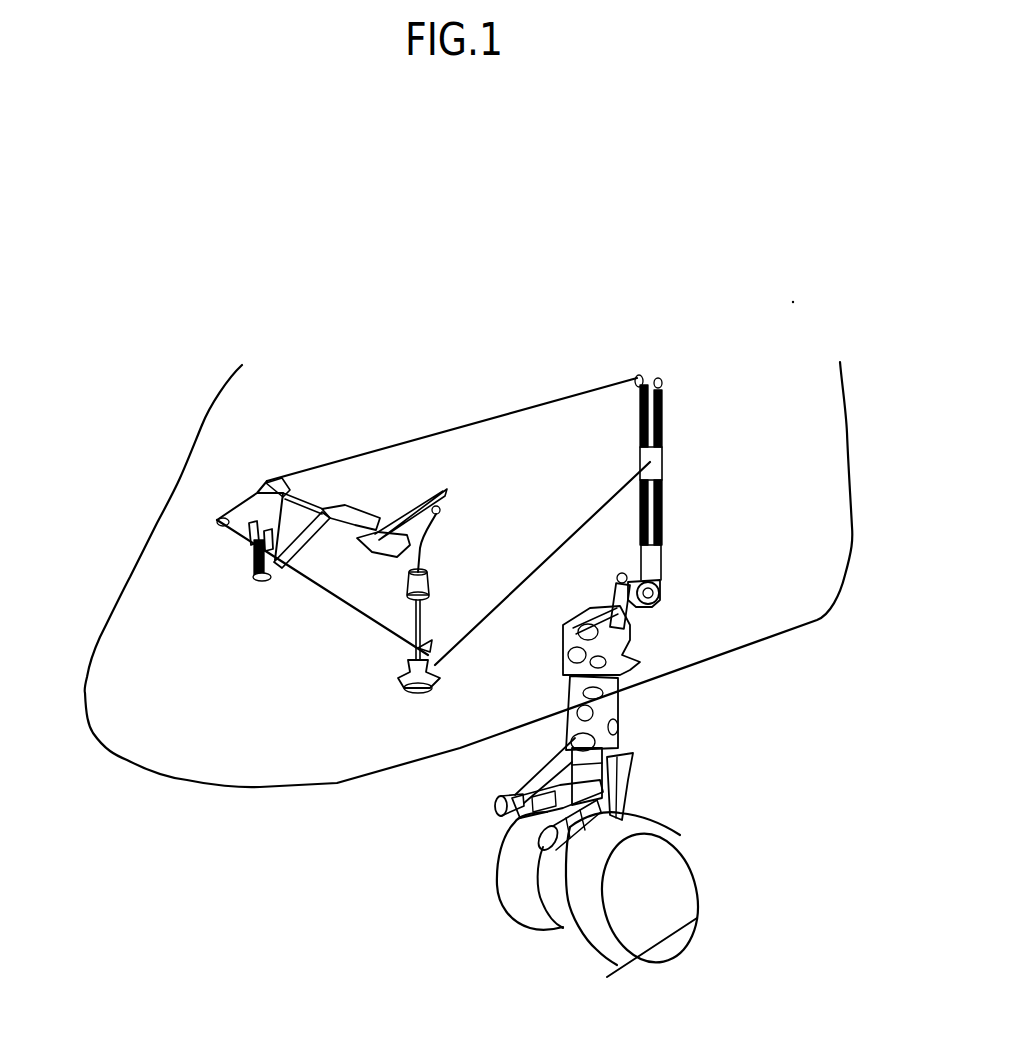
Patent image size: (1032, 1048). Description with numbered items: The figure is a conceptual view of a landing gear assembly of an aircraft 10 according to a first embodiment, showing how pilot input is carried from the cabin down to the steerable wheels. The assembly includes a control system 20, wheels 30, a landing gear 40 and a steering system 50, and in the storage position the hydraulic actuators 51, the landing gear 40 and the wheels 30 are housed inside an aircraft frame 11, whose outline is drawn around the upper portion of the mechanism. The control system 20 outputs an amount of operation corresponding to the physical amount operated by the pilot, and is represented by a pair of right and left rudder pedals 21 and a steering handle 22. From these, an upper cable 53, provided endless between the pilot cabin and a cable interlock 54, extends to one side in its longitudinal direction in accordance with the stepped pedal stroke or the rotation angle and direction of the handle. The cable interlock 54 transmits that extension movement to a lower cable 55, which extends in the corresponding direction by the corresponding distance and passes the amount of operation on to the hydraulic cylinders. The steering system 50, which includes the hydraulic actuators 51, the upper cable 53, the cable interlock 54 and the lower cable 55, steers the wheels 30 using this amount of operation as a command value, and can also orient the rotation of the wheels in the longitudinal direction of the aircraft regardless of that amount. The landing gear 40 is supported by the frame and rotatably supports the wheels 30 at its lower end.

The aircraft 10 is at (421, 237).
The aircraft frame 11 is at (236, 359).
The control system 20 is at (358, 587).
The rudder pedals 21 is at (240, 553).
The steering handle 22 is at (438, 555).
The wheels 30 is at (519, 887).
The landing gear 40 is at (620, 754).
The steering system 50 is at (579, 347).
The hydraulic actuators 51 is at (481, 810).
The upper cable 53 is at (450, 424).
The cable interlock 54 is at (667, 610).
The lower cable 55 is at (631, 704).